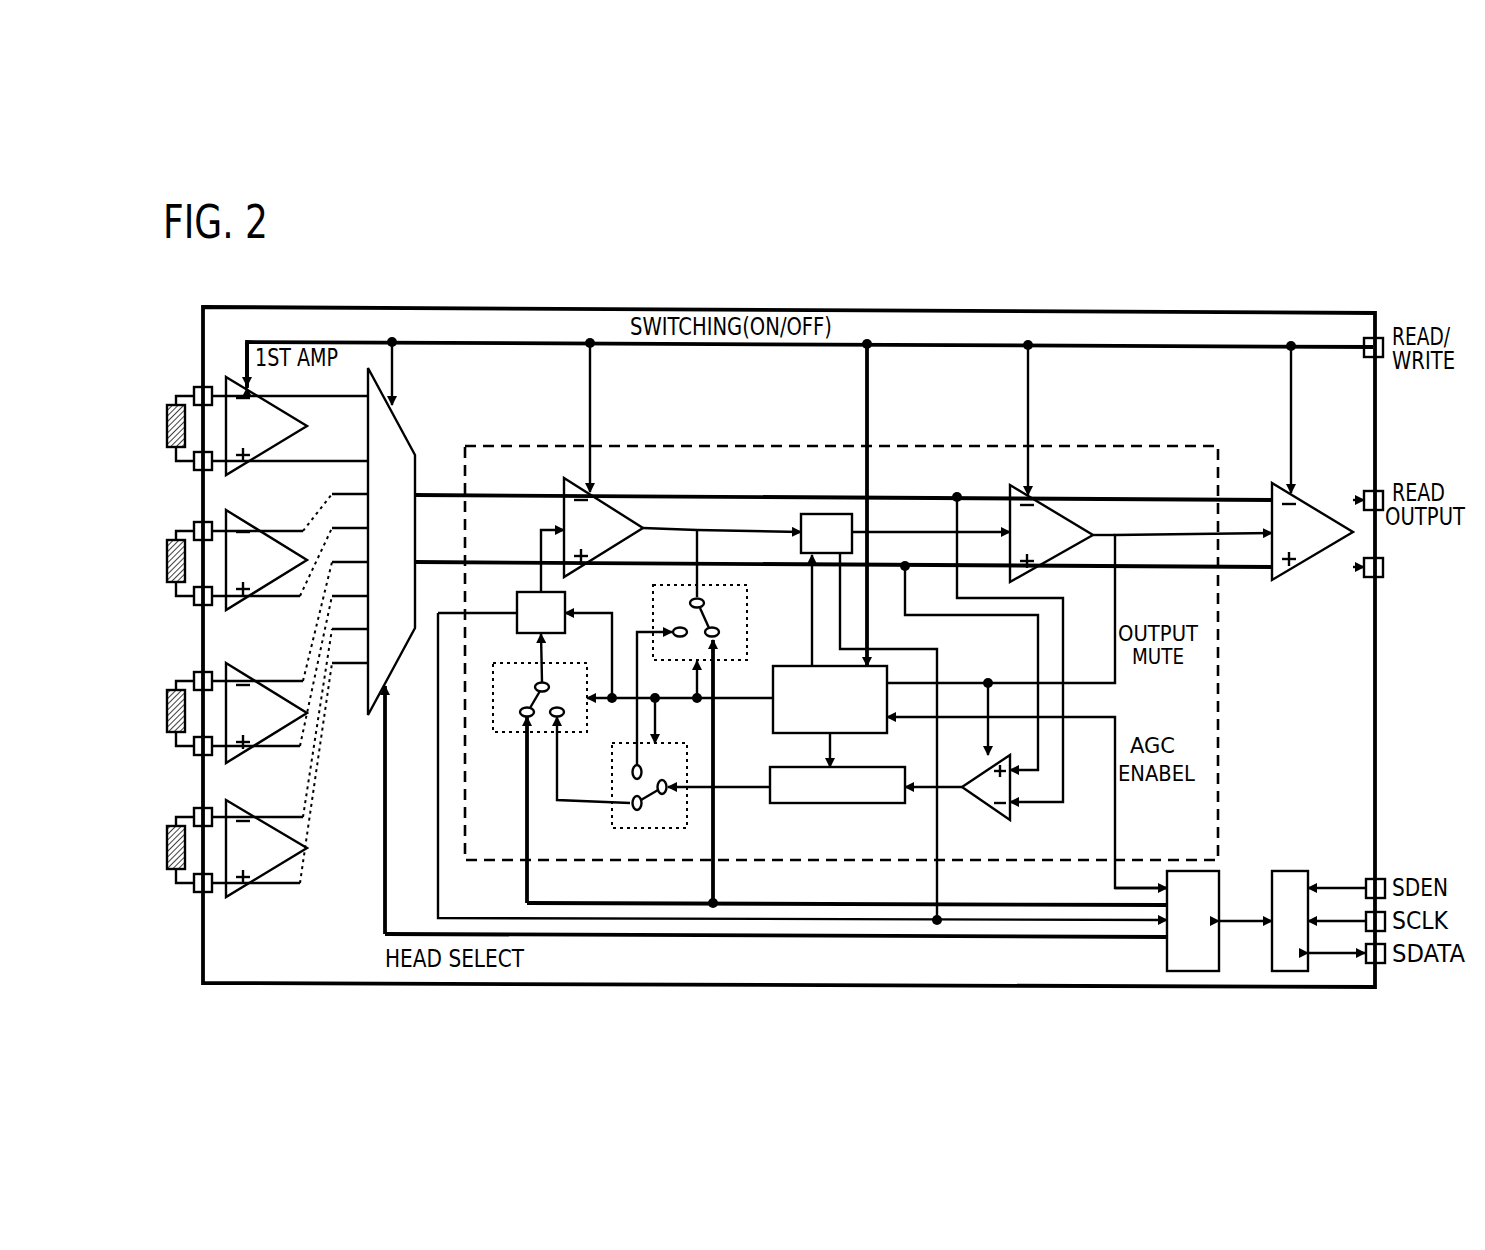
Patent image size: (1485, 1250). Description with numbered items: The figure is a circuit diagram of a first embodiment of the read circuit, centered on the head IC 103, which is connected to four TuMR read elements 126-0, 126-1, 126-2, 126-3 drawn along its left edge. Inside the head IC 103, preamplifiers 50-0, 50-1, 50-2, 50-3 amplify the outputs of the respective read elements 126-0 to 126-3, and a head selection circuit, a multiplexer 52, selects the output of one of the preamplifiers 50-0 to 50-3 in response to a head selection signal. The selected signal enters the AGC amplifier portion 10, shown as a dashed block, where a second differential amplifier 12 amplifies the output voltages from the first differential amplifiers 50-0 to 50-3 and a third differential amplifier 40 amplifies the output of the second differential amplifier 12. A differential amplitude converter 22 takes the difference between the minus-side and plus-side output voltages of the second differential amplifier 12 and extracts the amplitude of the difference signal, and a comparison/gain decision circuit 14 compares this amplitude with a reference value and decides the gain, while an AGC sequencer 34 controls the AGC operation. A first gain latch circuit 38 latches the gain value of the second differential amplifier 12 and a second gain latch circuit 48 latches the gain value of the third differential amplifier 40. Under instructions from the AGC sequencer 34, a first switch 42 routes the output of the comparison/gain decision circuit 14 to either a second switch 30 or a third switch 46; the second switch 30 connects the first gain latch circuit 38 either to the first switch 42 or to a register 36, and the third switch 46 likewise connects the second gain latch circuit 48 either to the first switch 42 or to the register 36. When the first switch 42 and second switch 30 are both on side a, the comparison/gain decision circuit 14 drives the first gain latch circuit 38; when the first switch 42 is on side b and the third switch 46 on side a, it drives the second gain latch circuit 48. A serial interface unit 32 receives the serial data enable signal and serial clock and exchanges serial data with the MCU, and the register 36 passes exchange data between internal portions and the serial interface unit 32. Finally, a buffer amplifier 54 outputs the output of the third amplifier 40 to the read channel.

The head IC 103 is at (1173, 332).
The read element 126-0 is at (164, 400).
The read element 126-1 is at (164, 536).
The read element 126-2 is at (164, 685).
The read element 126-3 is at (164, 822).
The preamplifier 50-0 is at (290, 432).
The preamplifier 50-1 is at (250, 524).
The preamplifier 50-2 is at (244, 675).
The preamplifier 50-3 is at (244, 812).
The head selection circuit (multiplexer) 52 is at (402, 437).
The AGC amplifier portion 10 is at (1174, 459).
The second differential amplifier 12 is at (603, 511).
The first gain latch circuit 38 is at (516, 612).
The second switch 30 is at (509, 678).
The third switch 46 is at (748, 640).
The first switch 42 is at (616, 826).
The AGC sequencer 34 is at (775, 734).
The second gain latch circuit 48 is at (798, 512).
The third differential amplifier 40 is at (1056, 517).
The differential amplitude converter 22 is at (990, 794).
The comparison/gain decision circuit 14 is at (822, 804).
The buffer amplifier 54 is at (1303, 512).
The register 36 is at (1224, 890).
The serial interface unit 32 is at (1288, 880).